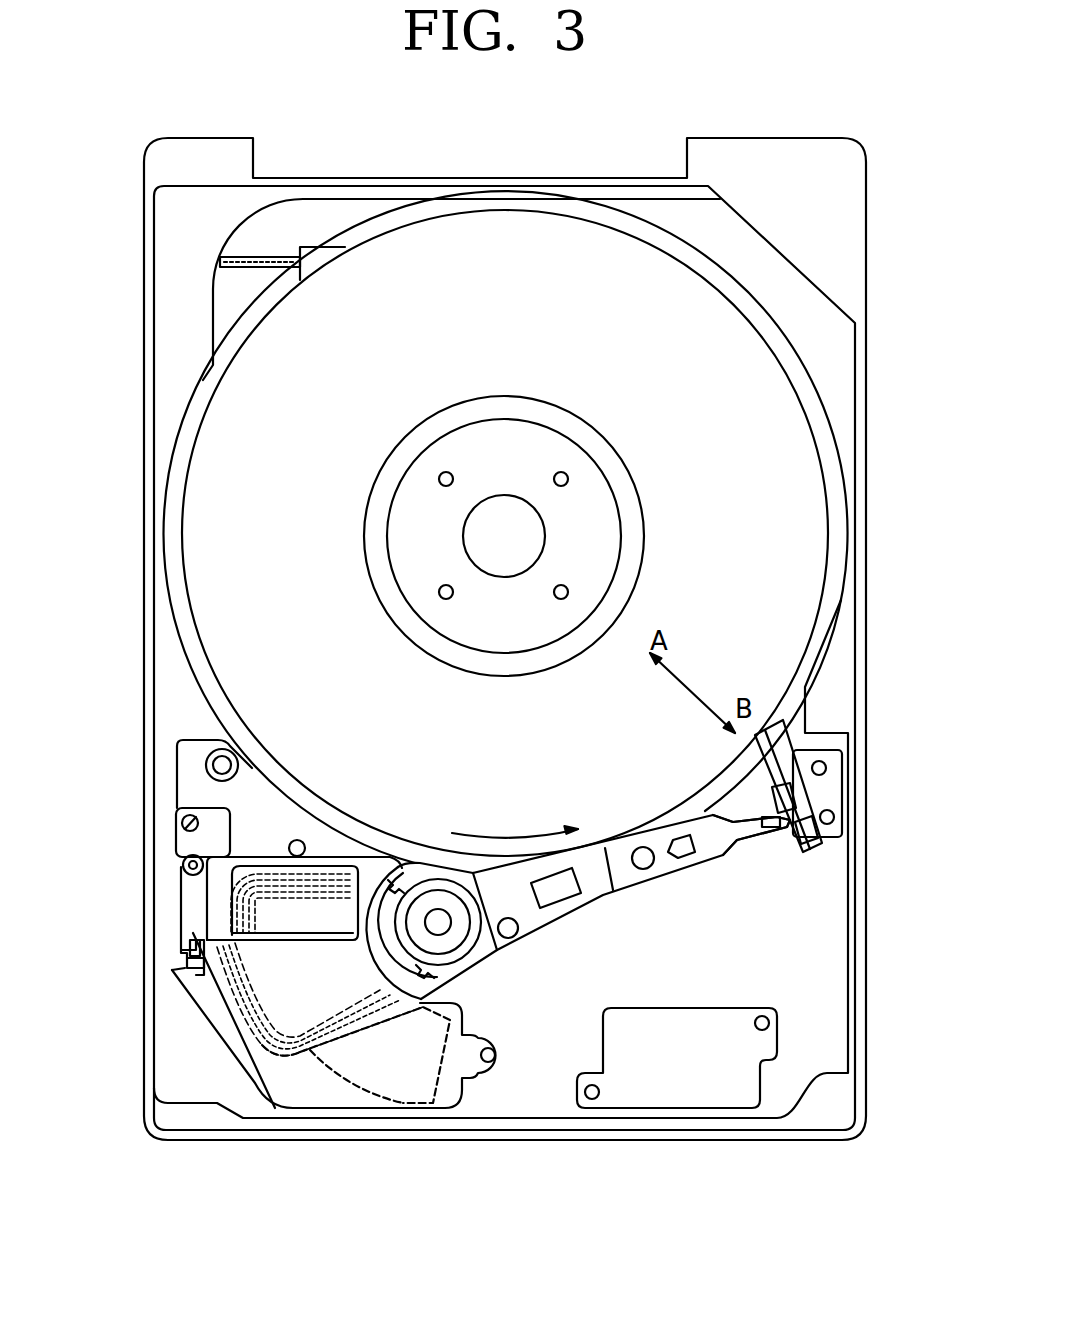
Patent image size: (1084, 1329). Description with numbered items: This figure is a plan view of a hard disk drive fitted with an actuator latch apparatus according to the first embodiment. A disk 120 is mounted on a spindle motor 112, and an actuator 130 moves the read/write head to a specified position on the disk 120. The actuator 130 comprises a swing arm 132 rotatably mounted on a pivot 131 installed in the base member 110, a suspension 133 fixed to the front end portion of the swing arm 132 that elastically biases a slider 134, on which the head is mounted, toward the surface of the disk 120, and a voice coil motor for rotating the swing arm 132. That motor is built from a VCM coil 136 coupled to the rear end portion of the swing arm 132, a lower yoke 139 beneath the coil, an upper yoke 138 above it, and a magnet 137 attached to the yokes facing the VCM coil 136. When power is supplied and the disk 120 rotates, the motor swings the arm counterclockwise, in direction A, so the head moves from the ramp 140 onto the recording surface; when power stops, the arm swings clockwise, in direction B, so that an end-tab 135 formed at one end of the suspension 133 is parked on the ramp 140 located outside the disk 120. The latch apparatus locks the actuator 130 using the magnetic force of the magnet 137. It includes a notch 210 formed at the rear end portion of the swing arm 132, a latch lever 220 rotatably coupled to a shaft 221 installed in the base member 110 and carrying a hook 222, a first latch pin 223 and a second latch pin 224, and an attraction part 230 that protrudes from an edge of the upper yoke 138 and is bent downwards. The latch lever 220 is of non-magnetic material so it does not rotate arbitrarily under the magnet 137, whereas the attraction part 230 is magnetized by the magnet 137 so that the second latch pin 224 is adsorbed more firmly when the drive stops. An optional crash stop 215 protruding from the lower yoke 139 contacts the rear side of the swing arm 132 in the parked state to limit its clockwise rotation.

The base member 110 is at (163, 637).
The spindle motor 112 is at (537, 450).
The disk 120 is at (807, 500).
The actuator 130 is at (512, 967).
The pivot 131 is at (440, 924).
The swing arm 132 is at (565, 905).
The suspension 133 is at (737, 842).
The slider 134 is at (772, 828).
The end-tab 135 is at (795, 816).
The VCM coil 136 is at (280, 1037).
The magnet 137 is at (413, 1097).
The upper yoke 138 is at (310, 1097).
The lower yoke 139 is at (190, 753).
The ramp 140 is at (793, 762).
The notch 210 is at (304, 848).
The crash stop 215 is at (250, 917).
The latch lever 220 is at (168, 884).
The shaft 221 is at (183, 866).
The hook 222 is at (190, 944).
The first latch pin 223 is at (197, 808).
The second latch pin 224 is at (200, 968).
The attraction part 230 is at (195, 972).